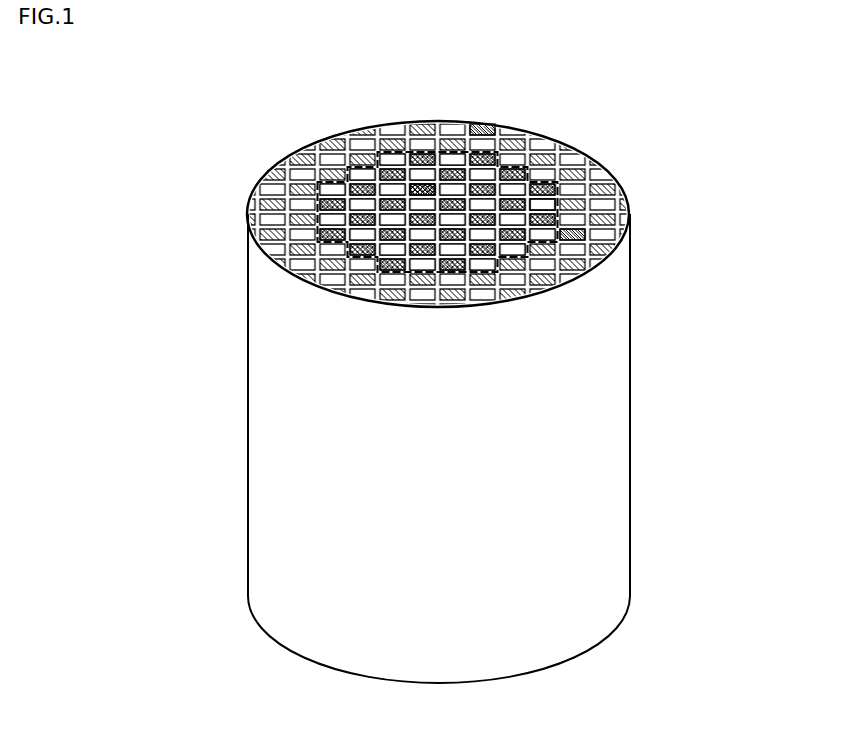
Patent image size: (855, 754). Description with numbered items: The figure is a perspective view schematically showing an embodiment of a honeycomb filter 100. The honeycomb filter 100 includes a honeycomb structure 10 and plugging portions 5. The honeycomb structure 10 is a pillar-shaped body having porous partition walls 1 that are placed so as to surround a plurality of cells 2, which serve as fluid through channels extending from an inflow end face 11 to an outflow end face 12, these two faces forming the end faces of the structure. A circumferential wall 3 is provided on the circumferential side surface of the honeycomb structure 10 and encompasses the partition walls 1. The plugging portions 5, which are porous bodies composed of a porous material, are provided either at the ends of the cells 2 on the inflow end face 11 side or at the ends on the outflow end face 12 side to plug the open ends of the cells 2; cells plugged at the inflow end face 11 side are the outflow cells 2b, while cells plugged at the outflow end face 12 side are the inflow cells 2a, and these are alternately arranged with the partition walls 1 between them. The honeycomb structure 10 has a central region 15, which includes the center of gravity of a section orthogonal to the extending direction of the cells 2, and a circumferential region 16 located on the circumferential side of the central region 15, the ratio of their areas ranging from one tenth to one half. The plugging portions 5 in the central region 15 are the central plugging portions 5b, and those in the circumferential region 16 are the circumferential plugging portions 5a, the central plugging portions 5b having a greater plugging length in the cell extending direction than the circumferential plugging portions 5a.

The honeycomb filter 100 is at (764, 71).
The honeycomb structure 10 is at (642, 254).
The partition walls 1 is at (530, 163).
The cells 2 is at (438, 211).
The inflow cells 2a is at (543, 205).
The outflow cells 2b is at (577, 235).
The circumferential wall 3 is at (600, 343).
The plugging portions 5 is at (394, 211).
The circumferential plugging portions 5a is at (470, 135).
The central plugging portions 5b is at (421, 185).
The inflow end face 11 is at (323, 138).
The outflow end face 12 is at (273, 646).
The central region 15 is at (362, 205).
The circumferential region 16 is at (327, 254).